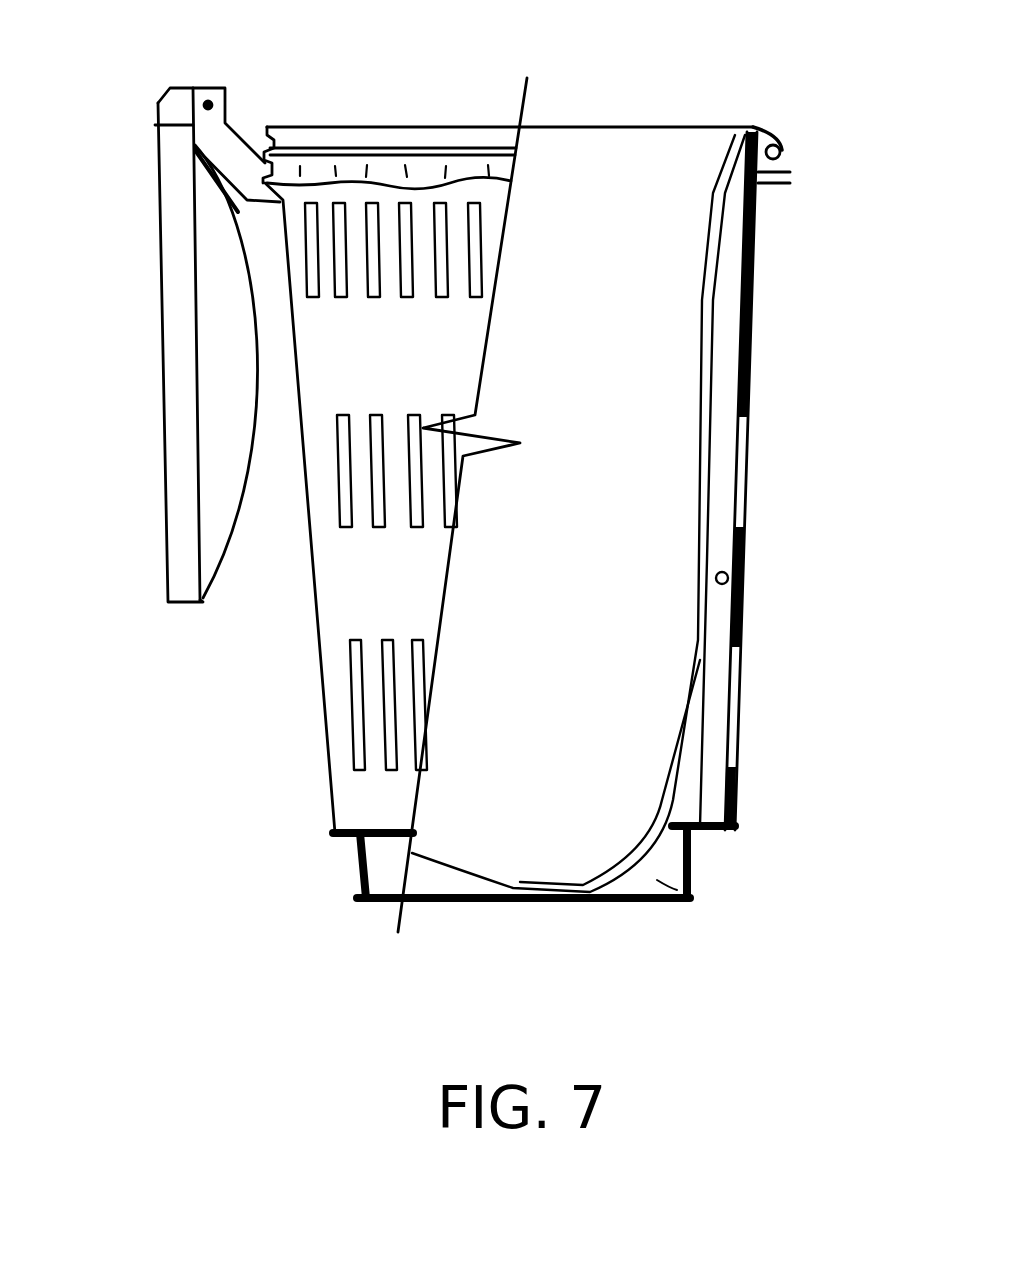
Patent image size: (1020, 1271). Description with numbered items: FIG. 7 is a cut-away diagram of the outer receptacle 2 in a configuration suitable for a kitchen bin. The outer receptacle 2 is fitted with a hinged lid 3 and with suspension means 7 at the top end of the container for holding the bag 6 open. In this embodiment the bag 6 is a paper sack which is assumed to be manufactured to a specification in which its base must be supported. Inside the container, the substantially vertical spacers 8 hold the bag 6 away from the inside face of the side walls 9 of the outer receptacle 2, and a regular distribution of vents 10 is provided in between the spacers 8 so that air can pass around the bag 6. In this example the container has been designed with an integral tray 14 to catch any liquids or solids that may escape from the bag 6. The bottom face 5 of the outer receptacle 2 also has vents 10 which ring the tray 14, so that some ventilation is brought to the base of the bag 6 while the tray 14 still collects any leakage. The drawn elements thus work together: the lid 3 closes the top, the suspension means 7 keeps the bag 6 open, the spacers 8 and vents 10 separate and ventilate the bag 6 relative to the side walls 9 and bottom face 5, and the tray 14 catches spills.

The outer receptacle 2 is at (752, 352).
The hinged lid 3 is at (203, 338).
The bottom face 5 is at (343, 840).
The bag 6 is at (613, 167).
The suspension means 7 is at (305, 147).
The substantially vertical spacers 8 is at (717, 458).
The side walls 9 is at (740, 587).
The vents 10 is at (353, 703).
The integral tray 14 is at (682, 903).